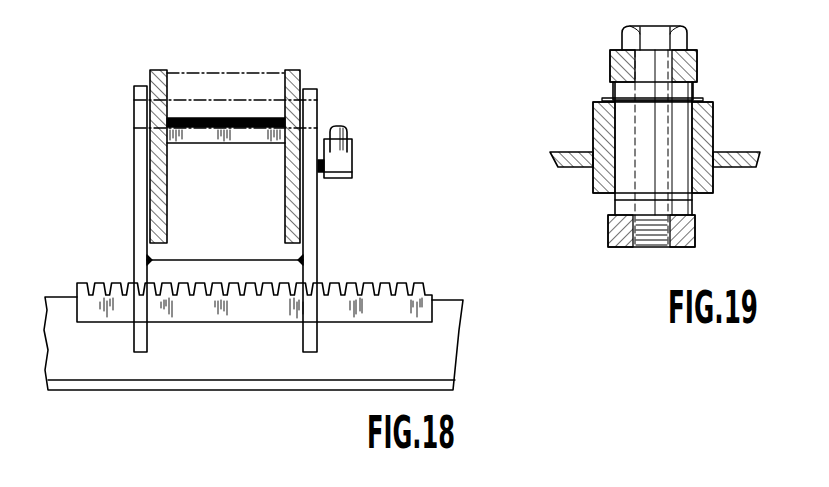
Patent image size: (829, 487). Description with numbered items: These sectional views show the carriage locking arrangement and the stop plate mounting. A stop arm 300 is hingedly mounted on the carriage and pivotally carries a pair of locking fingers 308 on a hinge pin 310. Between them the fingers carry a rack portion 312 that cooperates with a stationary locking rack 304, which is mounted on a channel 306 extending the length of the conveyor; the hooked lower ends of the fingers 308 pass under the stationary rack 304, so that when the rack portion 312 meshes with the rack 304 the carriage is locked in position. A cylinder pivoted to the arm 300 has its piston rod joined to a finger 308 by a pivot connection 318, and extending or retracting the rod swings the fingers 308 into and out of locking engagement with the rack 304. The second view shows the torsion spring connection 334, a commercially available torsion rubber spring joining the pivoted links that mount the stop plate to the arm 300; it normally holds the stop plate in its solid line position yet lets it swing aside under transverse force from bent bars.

In FIG. 18, the stop arm 300 is at (289, 76).
In FIG. 19, the stop arm 300 is at (741, 152).
In FIG. 18, the locking rack 304 is at (374, 284).
In FIG. 18, the channel 306 is at (460, 353).
In FIG. 18, the locking fingers 308 is at (308, 247).
In FIG. 18, the hinge pin 310 is at (226, 110).
In FIG. 18, the rack portion 312 is at (230, 272).
In FIG. 18, the pivot connection 318 is at (348, 134).
In FIG. 19, the torsion spring connection 334 is at (612, 88).